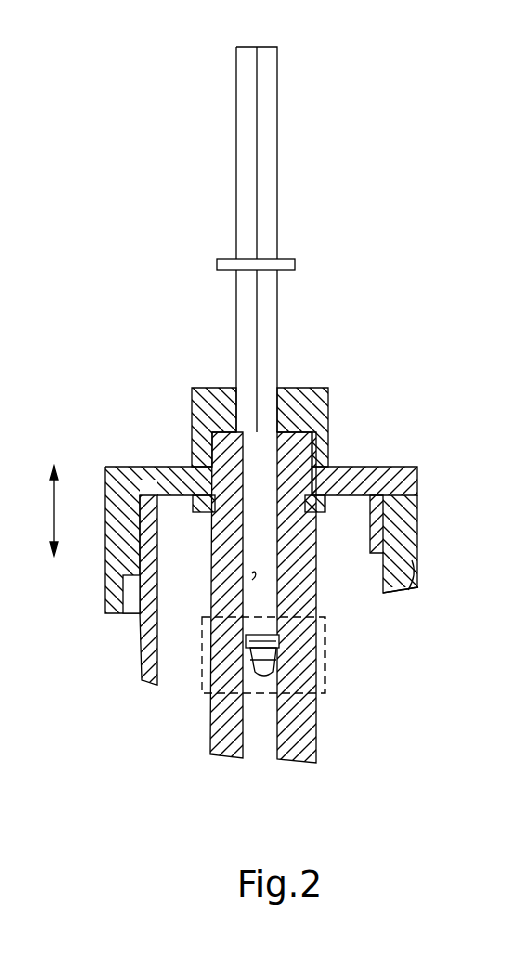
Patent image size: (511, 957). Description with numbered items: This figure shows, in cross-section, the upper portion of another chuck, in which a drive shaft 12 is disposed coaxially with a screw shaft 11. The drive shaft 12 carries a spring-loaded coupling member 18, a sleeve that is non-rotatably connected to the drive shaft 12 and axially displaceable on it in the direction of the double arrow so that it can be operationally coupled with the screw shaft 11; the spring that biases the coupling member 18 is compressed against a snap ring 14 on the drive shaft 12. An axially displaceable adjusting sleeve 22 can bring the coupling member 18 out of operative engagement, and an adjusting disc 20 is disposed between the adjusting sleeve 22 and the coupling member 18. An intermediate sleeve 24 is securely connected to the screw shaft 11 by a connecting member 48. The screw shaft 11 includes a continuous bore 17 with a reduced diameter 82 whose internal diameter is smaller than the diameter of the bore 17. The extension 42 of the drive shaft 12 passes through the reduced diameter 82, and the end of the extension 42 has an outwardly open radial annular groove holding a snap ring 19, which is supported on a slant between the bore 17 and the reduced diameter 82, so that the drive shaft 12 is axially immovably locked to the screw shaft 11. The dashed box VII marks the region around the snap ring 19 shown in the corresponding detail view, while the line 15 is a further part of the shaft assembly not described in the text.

The screw shaft 11 is at (312, 742).
The drive shaft 12 is at (270, 112).
The snap ring 14 is at (292, 253).
The spindle 15 is at (277, 295).
The bore 17 is at (250, 716).
The coupling member 18 is at (305, 402).
The snap ring 19 is at (278, 643).
The adjusting disc 20 is at (362, 467).
The adjusting sleeve 22 is at (405, 487).
The intermediate sleeve 24 is at (418, 587).
The extension 42 is at (265, 565).
The connecting member 48 is at (198, 497).
The reduced diameter 82 is at (252, 573).
The detail view VII is at (204, 695).